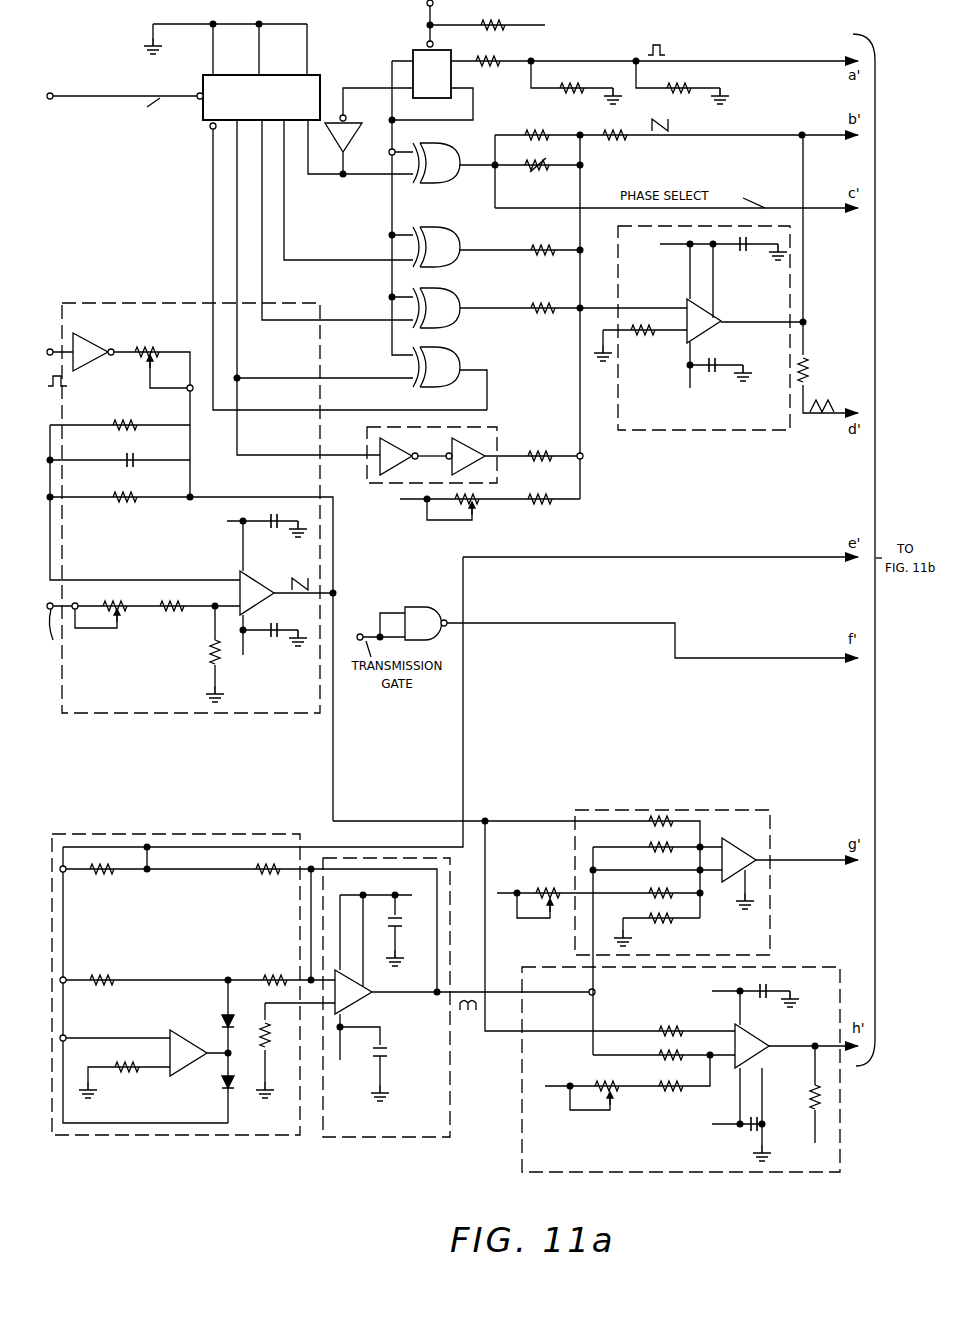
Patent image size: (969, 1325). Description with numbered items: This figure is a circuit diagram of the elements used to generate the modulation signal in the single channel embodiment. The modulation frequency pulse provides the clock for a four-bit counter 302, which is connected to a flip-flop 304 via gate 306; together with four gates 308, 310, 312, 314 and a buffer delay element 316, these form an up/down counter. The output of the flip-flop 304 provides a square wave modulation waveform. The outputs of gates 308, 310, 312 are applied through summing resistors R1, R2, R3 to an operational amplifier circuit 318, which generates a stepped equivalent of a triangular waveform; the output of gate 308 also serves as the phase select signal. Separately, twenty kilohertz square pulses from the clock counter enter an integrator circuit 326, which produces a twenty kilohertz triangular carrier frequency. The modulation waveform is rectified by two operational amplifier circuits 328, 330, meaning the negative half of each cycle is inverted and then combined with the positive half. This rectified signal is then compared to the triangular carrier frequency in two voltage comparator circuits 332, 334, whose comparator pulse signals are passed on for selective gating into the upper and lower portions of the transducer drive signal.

The 4-bit counter 302 is at (313, 80).
The flip-flop 304 is at (421, 46).
The gate 306 is at (352, 137).
The gate 308 is at (432, 157).
The gate 310 is at (435, 241).
The gate 312 is at (449, 303).
The gate 314 is at (457, 365).
The buffer delay element 316 is at (490, 428).
The operational amplifier circuit 318 is at (700, 432).
The integrator circuit 326 is at (122, 303).
The operational amplifier circuit 328 is at (157, 833).
The operational amplifier circuit 330 is at (415, 1141).
The voltage comparator circuit 332 is at (756, 810).
The voltage comparator circuit 334 is at (770, 967).
The summing resistor R1 is at (536, 172).
The summing resistor R2 is at (548, 246).
The summing resistor R3 is at (553, 304).